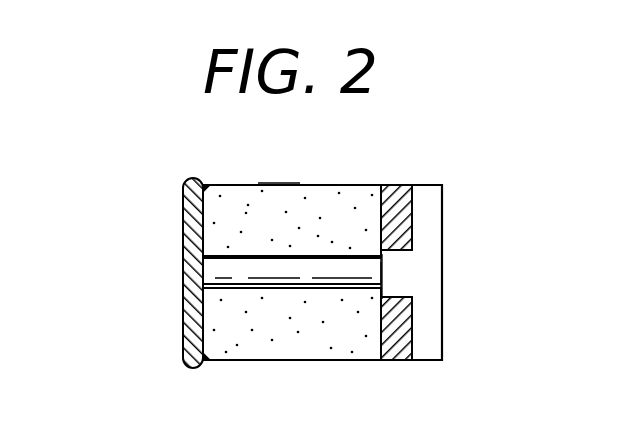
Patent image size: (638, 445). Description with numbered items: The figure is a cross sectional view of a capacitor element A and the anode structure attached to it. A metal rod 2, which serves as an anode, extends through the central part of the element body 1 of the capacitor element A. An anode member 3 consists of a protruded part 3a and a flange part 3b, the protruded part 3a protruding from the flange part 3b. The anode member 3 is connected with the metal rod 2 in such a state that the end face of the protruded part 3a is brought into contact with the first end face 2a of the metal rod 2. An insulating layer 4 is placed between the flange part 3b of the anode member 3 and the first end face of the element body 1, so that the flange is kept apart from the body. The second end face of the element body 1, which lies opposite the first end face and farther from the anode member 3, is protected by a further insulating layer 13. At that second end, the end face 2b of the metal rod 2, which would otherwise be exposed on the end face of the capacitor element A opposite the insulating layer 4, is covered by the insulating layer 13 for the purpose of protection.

The element body 1 is at (334, 185).
The metal rod 2 is at (285, 274).
The first end face 2a is at (381, 273).
The end face 2b is at (203, 272).
The anode member 3 is at (449, 248).
The protruded part 3a is at (392, 273).
The flange part 3b is at (421, 328).
The insulating layer 4 is at (403, 185).
The insulating layer 13 is at (196, 278).
The capacitor element A is at (258, 183).